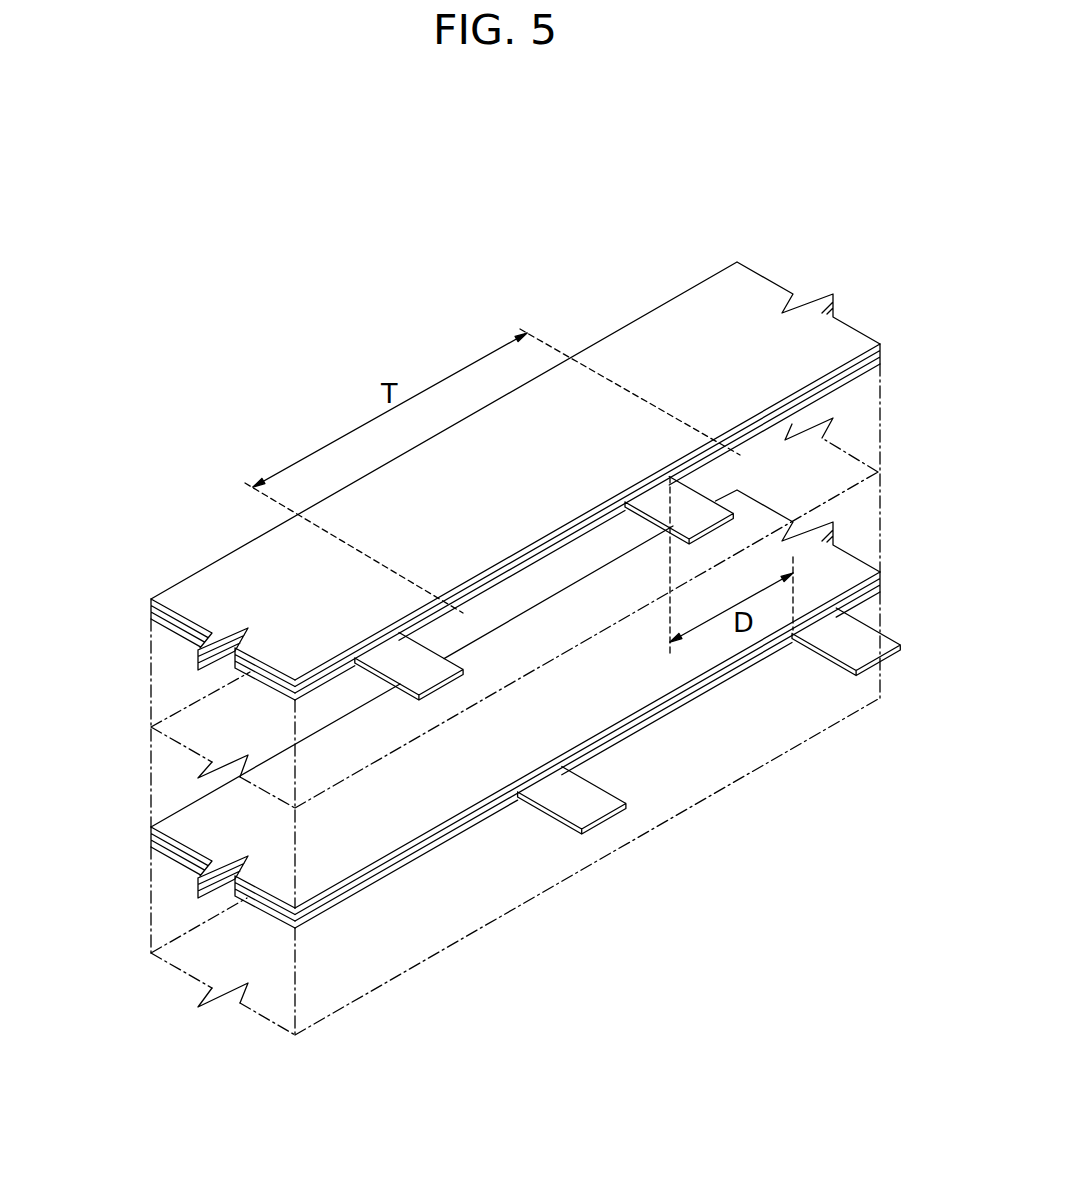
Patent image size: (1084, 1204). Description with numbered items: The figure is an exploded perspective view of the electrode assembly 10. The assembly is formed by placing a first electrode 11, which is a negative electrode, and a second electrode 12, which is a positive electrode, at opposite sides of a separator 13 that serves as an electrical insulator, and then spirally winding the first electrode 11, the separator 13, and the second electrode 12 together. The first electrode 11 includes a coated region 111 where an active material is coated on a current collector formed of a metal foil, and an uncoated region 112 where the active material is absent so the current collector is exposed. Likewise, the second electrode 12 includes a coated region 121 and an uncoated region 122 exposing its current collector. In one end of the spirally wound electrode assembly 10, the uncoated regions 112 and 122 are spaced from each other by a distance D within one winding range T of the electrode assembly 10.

The electrode assembly 10 is at (429, 290).
The first electrode 11 is at (497, 754).
The second electrode 12 is at (487, 477).
The separator 13 is at (327, 790).
The coated region 111 is at (395, 820).
The uncoated region 112 is at (588, 802).
The coated region 121 is at (222, 582).
The uncoated region 122 is at (427, 662).